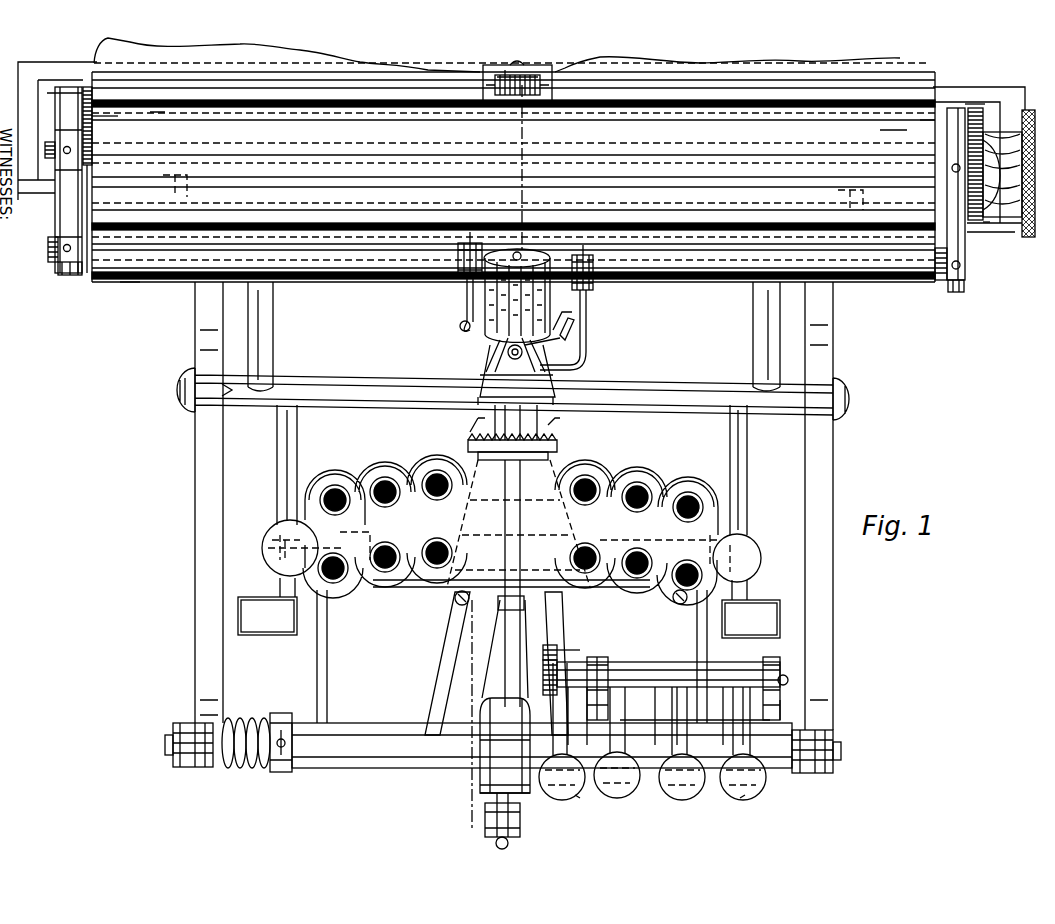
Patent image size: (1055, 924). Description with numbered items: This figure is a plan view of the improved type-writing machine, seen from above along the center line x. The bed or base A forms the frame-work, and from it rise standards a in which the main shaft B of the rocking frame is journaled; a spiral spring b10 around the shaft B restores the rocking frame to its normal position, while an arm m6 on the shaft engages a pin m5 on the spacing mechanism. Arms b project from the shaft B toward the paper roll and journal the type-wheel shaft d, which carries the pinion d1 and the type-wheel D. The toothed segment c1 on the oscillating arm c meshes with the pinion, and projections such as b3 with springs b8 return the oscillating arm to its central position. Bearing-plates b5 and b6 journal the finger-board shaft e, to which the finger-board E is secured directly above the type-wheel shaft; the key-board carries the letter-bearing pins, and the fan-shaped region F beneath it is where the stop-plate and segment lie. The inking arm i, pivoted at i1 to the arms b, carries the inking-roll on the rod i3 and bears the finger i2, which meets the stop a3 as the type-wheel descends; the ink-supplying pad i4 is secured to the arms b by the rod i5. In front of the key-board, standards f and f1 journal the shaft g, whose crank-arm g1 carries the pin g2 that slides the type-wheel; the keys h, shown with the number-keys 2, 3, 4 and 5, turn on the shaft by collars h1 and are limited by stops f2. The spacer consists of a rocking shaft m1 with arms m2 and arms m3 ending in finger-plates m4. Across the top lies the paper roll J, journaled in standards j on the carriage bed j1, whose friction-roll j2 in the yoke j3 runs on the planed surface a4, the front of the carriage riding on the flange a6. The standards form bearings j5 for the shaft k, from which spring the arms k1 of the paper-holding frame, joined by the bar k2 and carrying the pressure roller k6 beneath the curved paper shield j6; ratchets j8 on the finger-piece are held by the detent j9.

The curved paper shield j6 is at (512, 60).
The paper roll J is at (511, 177).
The center line x is at (494, 462).
The planed surface a4 is at (483, 82).
The yoke j3 is at (505, 72).
The friction-roll j2 is at (536, 76).
The bed of the carriage j1 is at (510, 183).
The standards j is at (55, 140).
The detent or pawl j9 is at (979, 110).
The shaft k is at (48, 250).
The arms of the paper-holding frame k1 is at (92, 118).
The bar k2 is at (117, 114).
The bearings j5 is at (69, 276).
The ratchets j8 is at (990, 225).
The flange a6 is at (520, 214).
The roller k6 is at (128, 279).
The bed or base A is at (511, 506).
The arms m2 is at (274, 312).
The rocking shaft m1 is at (513, 394).
The arms m3 is at (298, 443).
The finger-plates m4 is at (509, 617).
The pin m5 is at (278, 538).
The arm m6 is at (327, 652).
The main shaft B is at (542, 745).
The standards a is at (195, 767).
The spiral spring b10 is at (236, 720).
The finger-board E is at (514, 530).
The type-wheel D is at (525, 295).
The arm i is at (458, 262).
The ink-supplying roll or pad i4 is at (594, 277).
The bar or rod i3 is at (467, 300).
The rod i5 is at (587, 307).
The finger i2 is at (575, 330).
The stop or post a3 is at (562, 316).
The pivot i1 is at (505, 350).
The arms b is at (490, 368).
The type-wheel shaft d is at (548, 426).
The pinion d1 is at (478, 425).
The toothed segment c1 is at (557, 448).
The segment F is at (518, 523).
The oscillating arm c is at (524, 605).
The finger-board shaft e is at (509, 845).
The projection b3 is at (505, 745).
The bearing-plate b5 is at (522, 792).
The springs b8 is at (490, 690).
The bearing-plate b6 is at (455, 598).
The shaft g is at (543, 673).
The pin g2 is at (540, 653).
The crank-arm g1 is at (557, 650).
The collar h1 is at (645, 662).
The standard f is at (583, 711).
The standard f1 is at (778, 725).
The stops f2 is at (592, 793).
The keys h is at (578, 796).
The number key 2 is at (562, 731).
The number key 3 is at (617, 742).
The number key 4 is at (682, 743).
The number key 5 is at (743, 743).